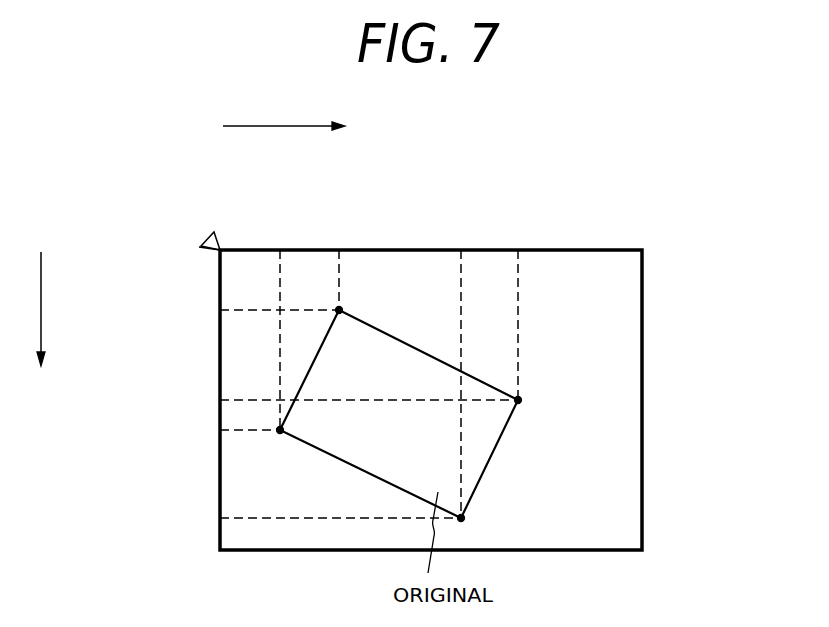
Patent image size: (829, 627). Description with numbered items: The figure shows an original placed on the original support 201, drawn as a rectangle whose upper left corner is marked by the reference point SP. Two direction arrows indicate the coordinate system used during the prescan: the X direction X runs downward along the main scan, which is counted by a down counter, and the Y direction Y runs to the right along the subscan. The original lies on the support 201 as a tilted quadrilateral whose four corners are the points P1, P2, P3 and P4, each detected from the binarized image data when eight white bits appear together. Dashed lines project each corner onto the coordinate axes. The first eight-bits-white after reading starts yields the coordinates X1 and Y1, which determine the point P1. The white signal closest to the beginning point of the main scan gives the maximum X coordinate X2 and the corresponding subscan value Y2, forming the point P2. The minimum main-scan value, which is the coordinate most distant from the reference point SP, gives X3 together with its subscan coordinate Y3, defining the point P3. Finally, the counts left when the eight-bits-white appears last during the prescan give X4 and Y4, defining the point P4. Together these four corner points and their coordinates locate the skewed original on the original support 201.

The original support 201 is at (628, 320).
The first corner point of original P1 is at (274, 446).
The second corner point of original P2 is at (353, 300).
The third corner point of original P3 is at (476, 519).
The fourth corner point of original P4 is at (533, 401).
The X1 coordinate X1 is at (233, 431).
The X2 coordinate X2 is at (262, 311).
The X3 coordinate X3 is at (323, 519).
The X4 coordinate X4 is at (352, 400).
The Y1 coordinate Y1 is at (280, 327).
The Y2 coordinate Y2 is at (338, 267).
The Y3 coordinate Y3 is at (461, 371).
The Y4 coordinate Y4 is at (517, 312).
The X direction X is at (41, 322).
The Y direction Y is at (291, 127).
The reference point SP is at (132, 228).